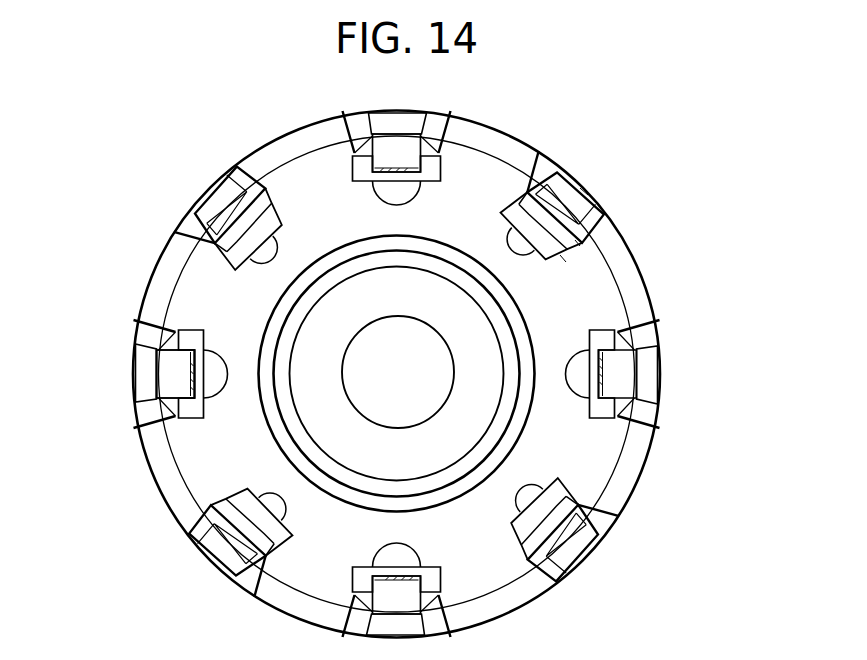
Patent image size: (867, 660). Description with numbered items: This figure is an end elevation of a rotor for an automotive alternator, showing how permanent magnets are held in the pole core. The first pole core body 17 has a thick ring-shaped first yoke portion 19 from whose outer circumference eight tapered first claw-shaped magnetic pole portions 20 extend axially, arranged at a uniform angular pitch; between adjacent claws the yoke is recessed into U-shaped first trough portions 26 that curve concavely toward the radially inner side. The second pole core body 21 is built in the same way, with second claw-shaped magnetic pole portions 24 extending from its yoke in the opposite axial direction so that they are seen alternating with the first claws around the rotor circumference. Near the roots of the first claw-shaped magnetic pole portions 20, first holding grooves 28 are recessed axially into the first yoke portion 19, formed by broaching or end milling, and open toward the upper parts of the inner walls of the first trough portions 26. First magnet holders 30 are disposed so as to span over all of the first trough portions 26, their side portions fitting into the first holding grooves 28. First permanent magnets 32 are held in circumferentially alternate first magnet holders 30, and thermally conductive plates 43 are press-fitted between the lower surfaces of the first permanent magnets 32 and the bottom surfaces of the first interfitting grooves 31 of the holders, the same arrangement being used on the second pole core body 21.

The first pole core body 17 is at (517, 136).
The second pole core body 21 is at (575, 167).
The first interfitting groove 31 is at (585, 192).
The first magnet holder 30 is at (577, 243).
The first holding groove 28 is at (563, 259).
The first trough portion 26 is at (573, 368).
The second claw-shaped magnetic pole portion 24 is at (213, 198).
The first claw-shaped magnetic pole portion 20 is at (162, 288).
The first permanent magnet 32 is at (173, 367).
The thermally conductive plate 43 is at (173, 380).
The first yoke portion 19 is at (243, 453).